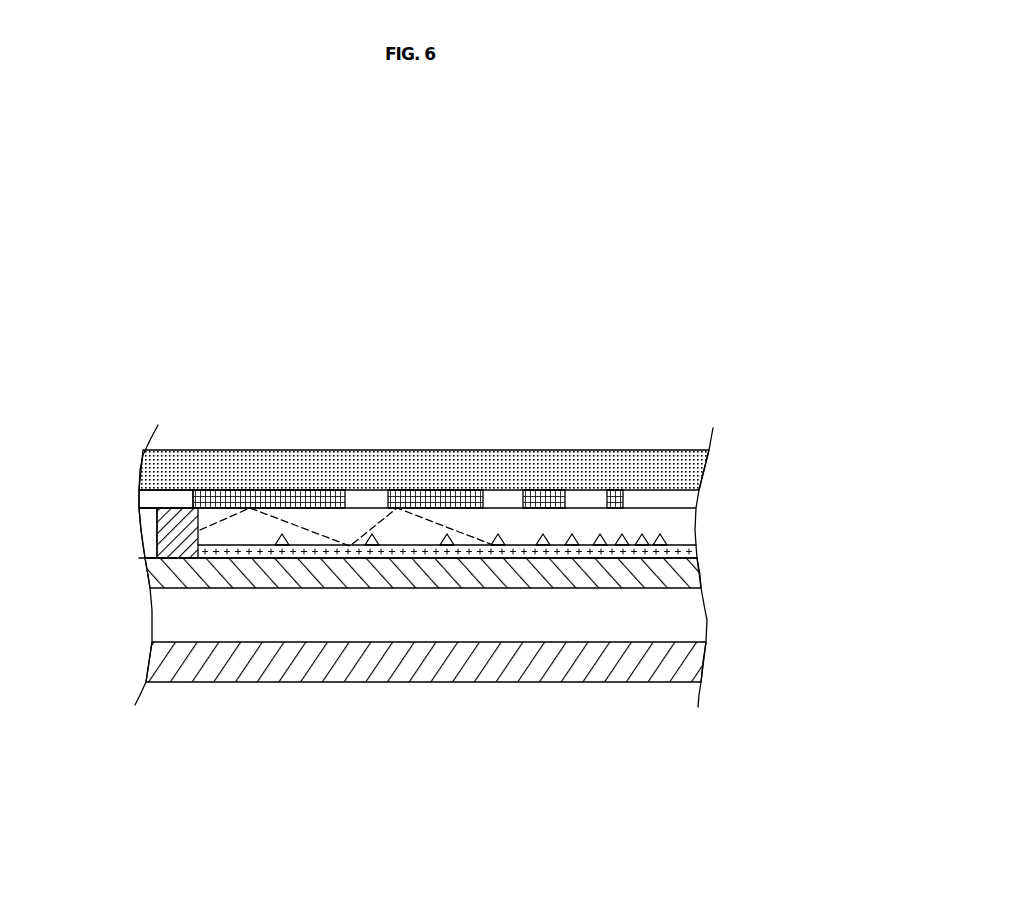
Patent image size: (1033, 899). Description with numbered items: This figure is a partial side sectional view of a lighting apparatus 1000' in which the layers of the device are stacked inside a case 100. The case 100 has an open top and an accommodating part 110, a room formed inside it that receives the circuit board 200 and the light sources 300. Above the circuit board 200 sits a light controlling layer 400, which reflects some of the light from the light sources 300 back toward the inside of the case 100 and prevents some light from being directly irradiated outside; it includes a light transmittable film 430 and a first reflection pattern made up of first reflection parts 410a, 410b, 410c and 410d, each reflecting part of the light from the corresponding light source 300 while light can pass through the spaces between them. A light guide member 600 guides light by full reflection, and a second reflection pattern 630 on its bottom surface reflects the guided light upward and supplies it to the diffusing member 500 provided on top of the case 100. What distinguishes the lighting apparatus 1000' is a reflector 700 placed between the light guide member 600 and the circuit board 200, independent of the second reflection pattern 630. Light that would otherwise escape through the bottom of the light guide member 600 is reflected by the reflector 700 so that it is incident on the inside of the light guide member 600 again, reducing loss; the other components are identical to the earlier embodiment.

The lighting apparatus 1000' is at (150, 274).
The case 100 is at (683, 668).
The accommodating part 110 is at (668, 628).
The circuit board 200 is at (683, 578).
The light source 300 is at (165, 546).
The light controlling layer 400 is at (151, 513).
The light transmittable film 430 is at (150, 503).
The first reflection part 410a is at (292, 492).
The first reflection part 410b is at (430, 492).
The first reflection part 410c is at (543, 492).
The first reflection part 410d is at (615, 492).
The diffusing member 500 is at (193, 462).
The light guide member 600 is at (683, 528).
The second reflection pattern 630 is at (506, 480).
The reflector 700 is at (683, 555).